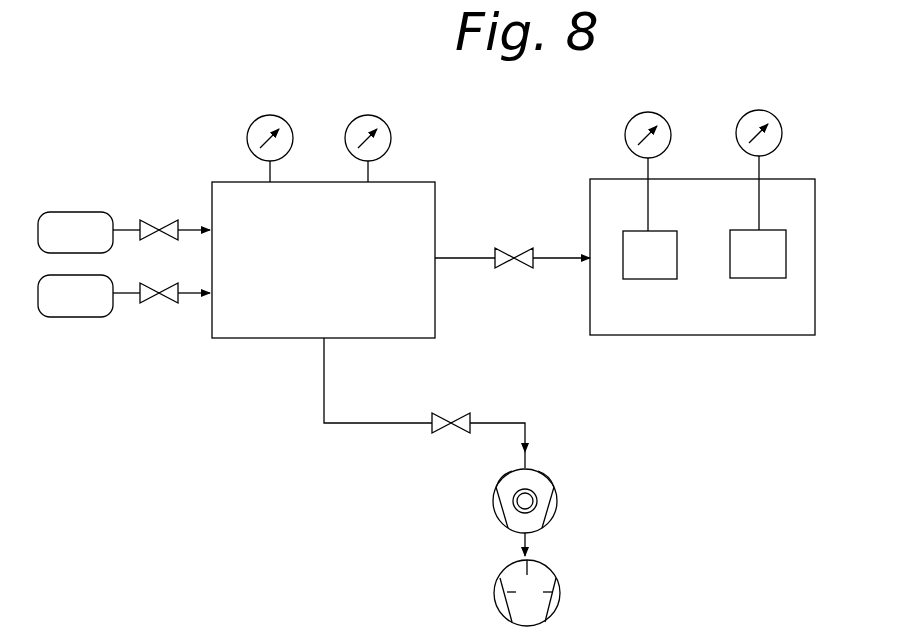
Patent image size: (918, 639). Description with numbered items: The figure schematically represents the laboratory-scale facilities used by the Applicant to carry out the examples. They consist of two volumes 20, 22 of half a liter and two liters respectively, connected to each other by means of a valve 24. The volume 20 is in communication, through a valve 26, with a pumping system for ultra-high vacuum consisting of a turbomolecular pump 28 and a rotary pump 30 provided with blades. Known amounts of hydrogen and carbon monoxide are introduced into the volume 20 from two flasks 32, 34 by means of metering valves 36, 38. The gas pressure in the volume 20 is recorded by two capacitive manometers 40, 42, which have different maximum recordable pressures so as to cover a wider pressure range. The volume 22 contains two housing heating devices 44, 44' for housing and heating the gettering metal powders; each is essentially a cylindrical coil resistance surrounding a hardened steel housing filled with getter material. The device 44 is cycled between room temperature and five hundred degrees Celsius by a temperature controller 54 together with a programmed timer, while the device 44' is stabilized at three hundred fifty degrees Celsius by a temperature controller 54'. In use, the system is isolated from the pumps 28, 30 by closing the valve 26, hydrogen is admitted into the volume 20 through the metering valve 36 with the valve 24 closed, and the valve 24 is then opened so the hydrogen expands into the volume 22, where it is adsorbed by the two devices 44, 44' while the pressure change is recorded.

The volume 20 is at (415, 189).
The volume 22 is at (798, 187).
The valve 24 is at (517, 254).
The valve 26 is at (442, 420).
The turbomolecular pump 28 is at (536, 478).
The rotary pump 30 is at (516, 570).
The flask 32 is at (73, 315).
The flask 34 is at (73, 213).
The metering valve 36 is at (172, 301).
The metering valve 38 is at (152, 226).
The capacitive manometer 40 is at (258, 128).
The capacitive manometer 42 is at (357, 128).
The housing heating device 44 is at (613, 236).
The housing heating device 44' is at (798, 253).
The temperature controller 54 is at (634, 158).
The temperature controller 54' is at (748, 156).